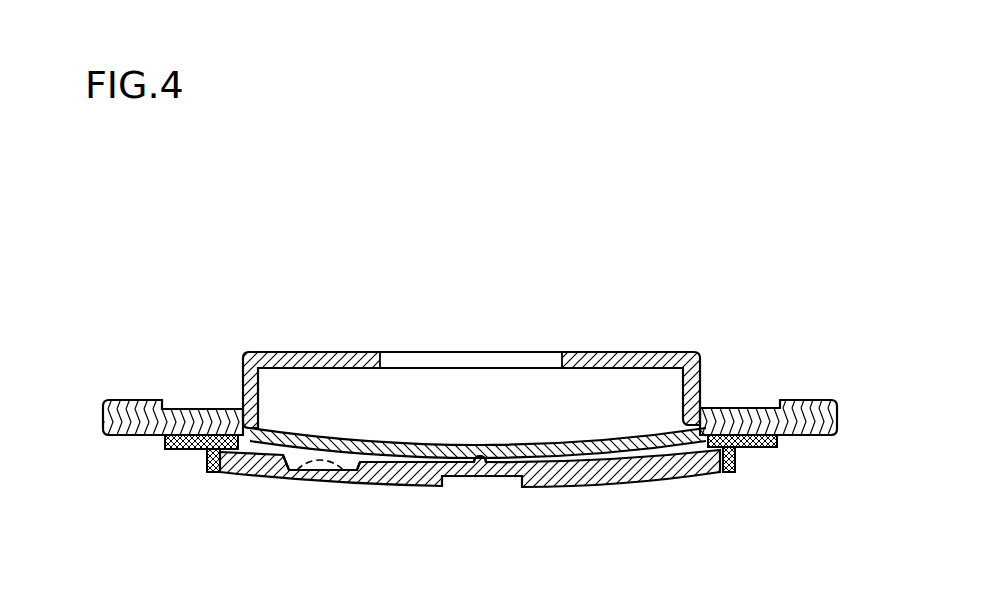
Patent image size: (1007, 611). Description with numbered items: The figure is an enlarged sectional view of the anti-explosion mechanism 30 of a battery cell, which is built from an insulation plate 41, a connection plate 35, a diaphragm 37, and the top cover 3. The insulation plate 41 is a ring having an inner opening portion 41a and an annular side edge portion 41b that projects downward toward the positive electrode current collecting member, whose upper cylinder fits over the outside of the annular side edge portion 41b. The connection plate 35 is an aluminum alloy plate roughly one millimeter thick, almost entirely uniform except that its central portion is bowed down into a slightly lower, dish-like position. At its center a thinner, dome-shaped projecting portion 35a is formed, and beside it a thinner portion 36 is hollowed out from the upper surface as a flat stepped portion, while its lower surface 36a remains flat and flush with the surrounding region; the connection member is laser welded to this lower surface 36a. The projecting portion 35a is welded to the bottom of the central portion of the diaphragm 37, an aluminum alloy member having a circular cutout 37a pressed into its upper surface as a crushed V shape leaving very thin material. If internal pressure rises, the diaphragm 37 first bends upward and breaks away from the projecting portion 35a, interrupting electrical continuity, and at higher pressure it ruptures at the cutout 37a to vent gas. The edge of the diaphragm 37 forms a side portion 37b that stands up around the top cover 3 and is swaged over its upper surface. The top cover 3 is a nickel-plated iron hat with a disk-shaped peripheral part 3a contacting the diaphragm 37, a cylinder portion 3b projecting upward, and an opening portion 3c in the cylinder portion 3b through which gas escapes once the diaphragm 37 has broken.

The anti-explosion mechanism 30 is at (695, 237).
The top cover 3 is at (433, 230).
The peripheral part 3a is at (217, 410).
The cylinder portion 3b is at (323, 352).
The opening portion 3c is at (380, 363).
The connection plate 35 is at (613, 473).
The projecting portion 35a is at (480, 460).
The thinner portion 36 is at (318, 478).
The lower surface of the thinner portion 36a is at (300, 477).
The diaphragm 37 is at (122, 437).
The cutout 37a is at (600, 445).
The side portion 37b is at (105, 420).
The insulation plate 41 is at (763, 445).
The inner opening portion 41a is at (708, 450).
The annular side edge portion 41b is at (737, 460).